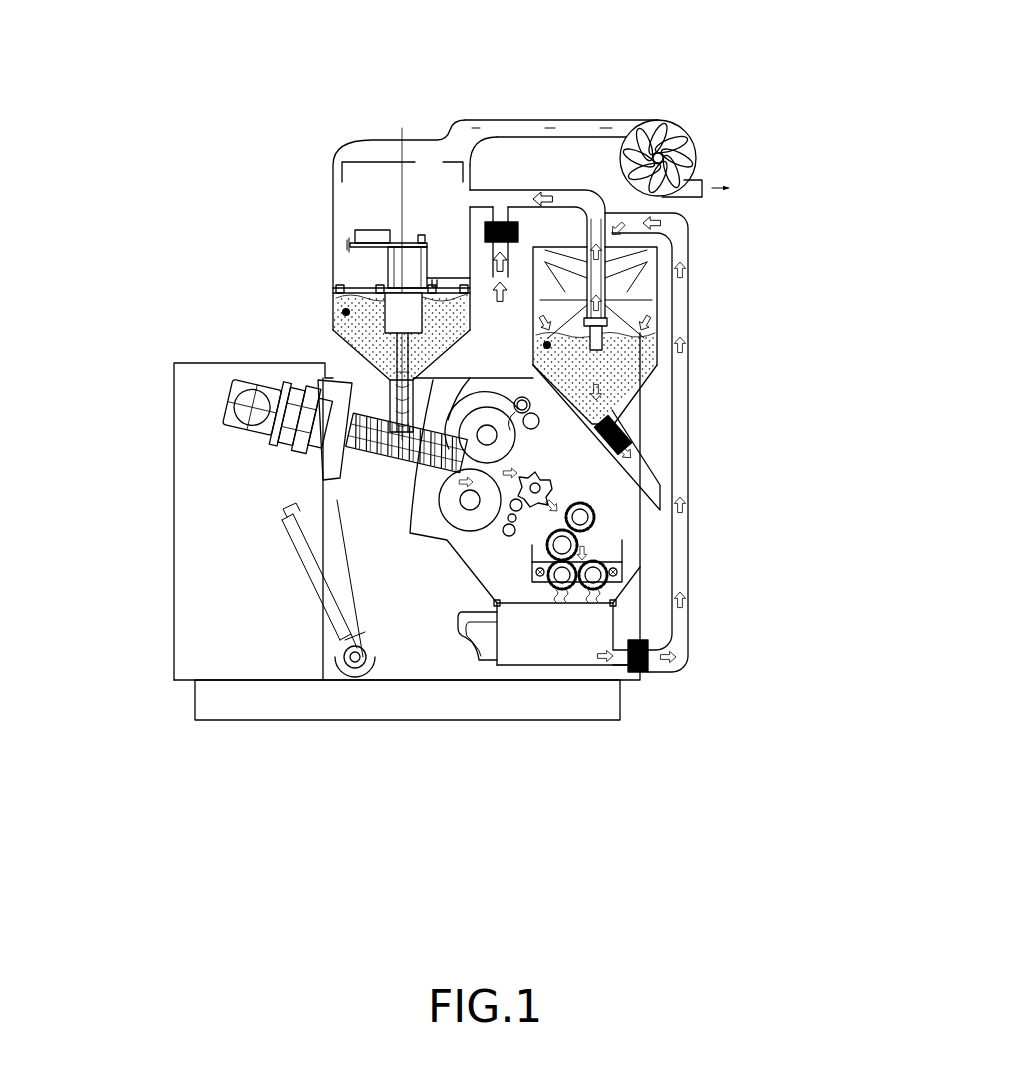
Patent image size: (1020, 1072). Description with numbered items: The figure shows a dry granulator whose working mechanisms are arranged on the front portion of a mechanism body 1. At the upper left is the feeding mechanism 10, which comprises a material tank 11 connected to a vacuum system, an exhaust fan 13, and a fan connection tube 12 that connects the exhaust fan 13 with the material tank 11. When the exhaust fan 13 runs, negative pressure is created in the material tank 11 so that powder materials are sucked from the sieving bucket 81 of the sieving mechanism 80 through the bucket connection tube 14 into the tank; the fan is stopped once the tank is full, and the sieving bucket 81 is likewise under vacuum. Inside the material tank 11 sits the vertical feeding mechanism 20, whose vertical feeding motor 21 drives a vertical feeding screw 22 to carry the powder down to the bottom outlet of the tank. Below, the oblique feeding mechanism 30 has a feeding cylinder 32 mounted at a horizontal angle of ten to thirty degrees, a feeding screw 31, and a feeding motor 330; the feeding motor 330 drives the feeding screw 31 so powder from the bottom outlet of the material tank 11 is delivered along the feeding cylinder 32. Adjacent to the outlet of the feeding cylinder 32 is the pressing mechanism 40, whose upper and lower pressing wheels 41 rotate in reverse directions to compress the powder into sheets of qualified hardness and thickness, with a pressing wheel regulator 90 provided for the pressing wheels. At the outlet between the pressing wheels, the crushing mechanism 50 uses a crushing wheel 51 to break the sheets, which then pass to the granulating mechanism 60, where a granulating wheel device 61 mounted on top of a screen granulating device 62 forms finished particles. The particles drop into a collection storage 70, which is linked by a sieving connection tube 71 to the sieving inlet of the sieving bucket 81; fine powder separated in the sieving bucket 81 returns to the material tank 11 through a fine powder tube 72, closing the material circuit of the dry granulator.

The mechanism body 1 is at (196, 432).
The feeding mechanism 10 is at (278, 105).
The material tank 11 is at (347, 157).
The fan connection tube 12 is at (570, 128).
The exhaust fan 13 is at (680, 123).
The bucket connection tube 14 is at (490, 222).
The vertical feeding mechanism 20 is at (255, 210).
The vertical feeding motor 21 is at (367, 210).
The vertical feeding screw 22 is at (393, 333).
The oblique feeding mechanism 30 is at (160, 657).
The feeding screw 31 is at (382, 488).
The feeding cylinder 32 is at (470, 545).
The feeding motor 330 is at (252, 432).
The pressing mechanism 40 is at (382, 790).
The pressing wheel 41 is at (348, 500).
The crushing mechanism 50 is at (455, 790).
The crushing wheel 51 is at (465, 520).
The granulating mechanism 60 is at (727, 420).
The granulating wheel device 61 is at (630, 415).
The screen granulating device 62 is at (585, 508).
The collection storage 70 is at (545, 638).
The sieving connection tube 71 is at (680, 580).
The fine powder tube 72 is at (530, 200).
The sieving mechanism 80 is at (775, 272).
The sieving bucket 81 is at (653, 310).
The pressing wheel regulator 90 is at (318, 603).